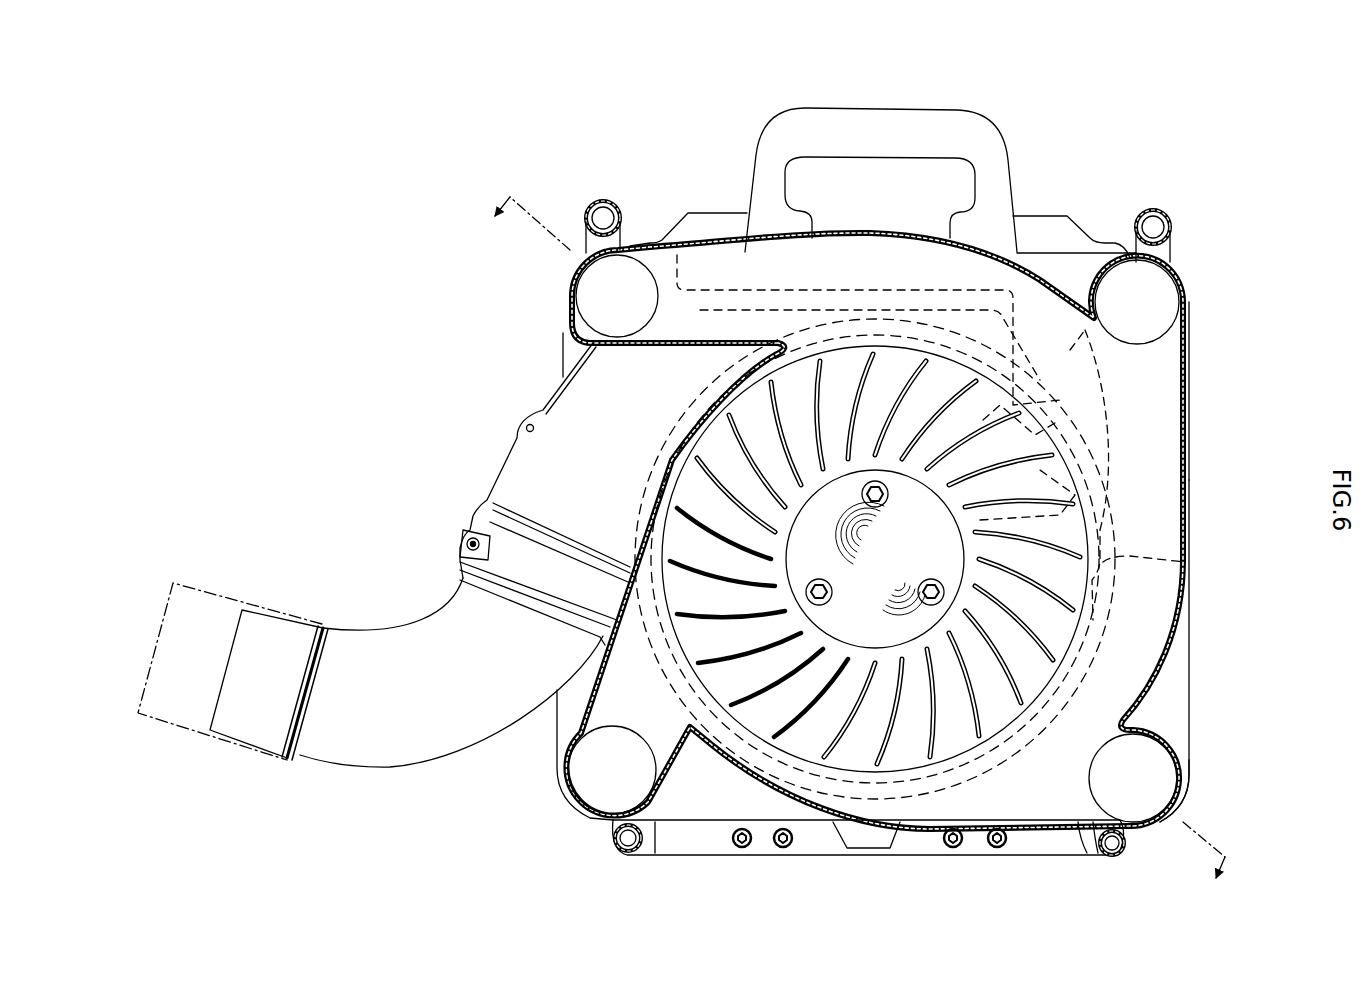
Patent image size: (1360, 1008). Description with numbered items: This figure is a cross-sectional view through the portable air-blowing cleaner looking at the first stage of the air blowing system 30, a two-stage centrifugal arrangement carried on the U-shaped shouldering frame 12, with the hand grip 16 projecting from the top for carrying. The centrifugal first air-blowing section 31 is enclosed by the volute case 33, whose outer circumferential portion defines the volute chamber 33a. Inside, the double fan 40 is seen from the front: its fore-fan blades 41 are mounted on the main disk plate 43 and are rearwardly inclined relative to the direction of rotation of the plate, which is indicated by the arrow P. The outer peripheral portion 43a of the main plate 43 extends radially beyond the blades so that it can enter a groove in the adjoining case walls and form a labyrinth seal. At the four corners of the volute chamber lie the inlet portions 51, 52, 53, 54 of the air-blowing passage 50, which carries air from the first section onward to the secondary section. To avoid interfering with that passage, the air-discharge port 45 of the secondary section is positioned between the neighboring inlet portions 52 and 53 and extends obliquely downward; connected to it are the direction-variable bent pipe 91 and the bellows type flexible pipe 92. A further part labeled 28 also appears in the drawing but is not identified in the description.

The shouldering frame 12 is at (603, 199).
The hand grip 16 is at (887, 122).
The engine cover 28 is at (707, 235).
The air blowing system 30 is at (1128, 130).
The first air-blowing section 31 is at (823, 802).
The volute case 33 is at (1155, 673).
The volute chamber 33a is at (1090, 615).
The double fan 40 is at (904, 742).
The fore-fan blade 41 is at (941, 742).
The main disk plate 43 is at (986, 705).
The outer peripheral portion 43a is at (1185, 566).
The air-discharge port 45 is at (562, 437).
The air-blowing passage 50 is at (606, 277).
The inlet portion 51 is at (1196, 302).
The inlet portion 52 is at (567, 313).
The inlet portion 53 is at (590, 821).
The inlet portion 54 is at (1175, 795).
The bent pipe 91 is at (407, 673).
The bellows type flexible pipe 92 is at (240, 598).
The arrow P is at (786, 432).